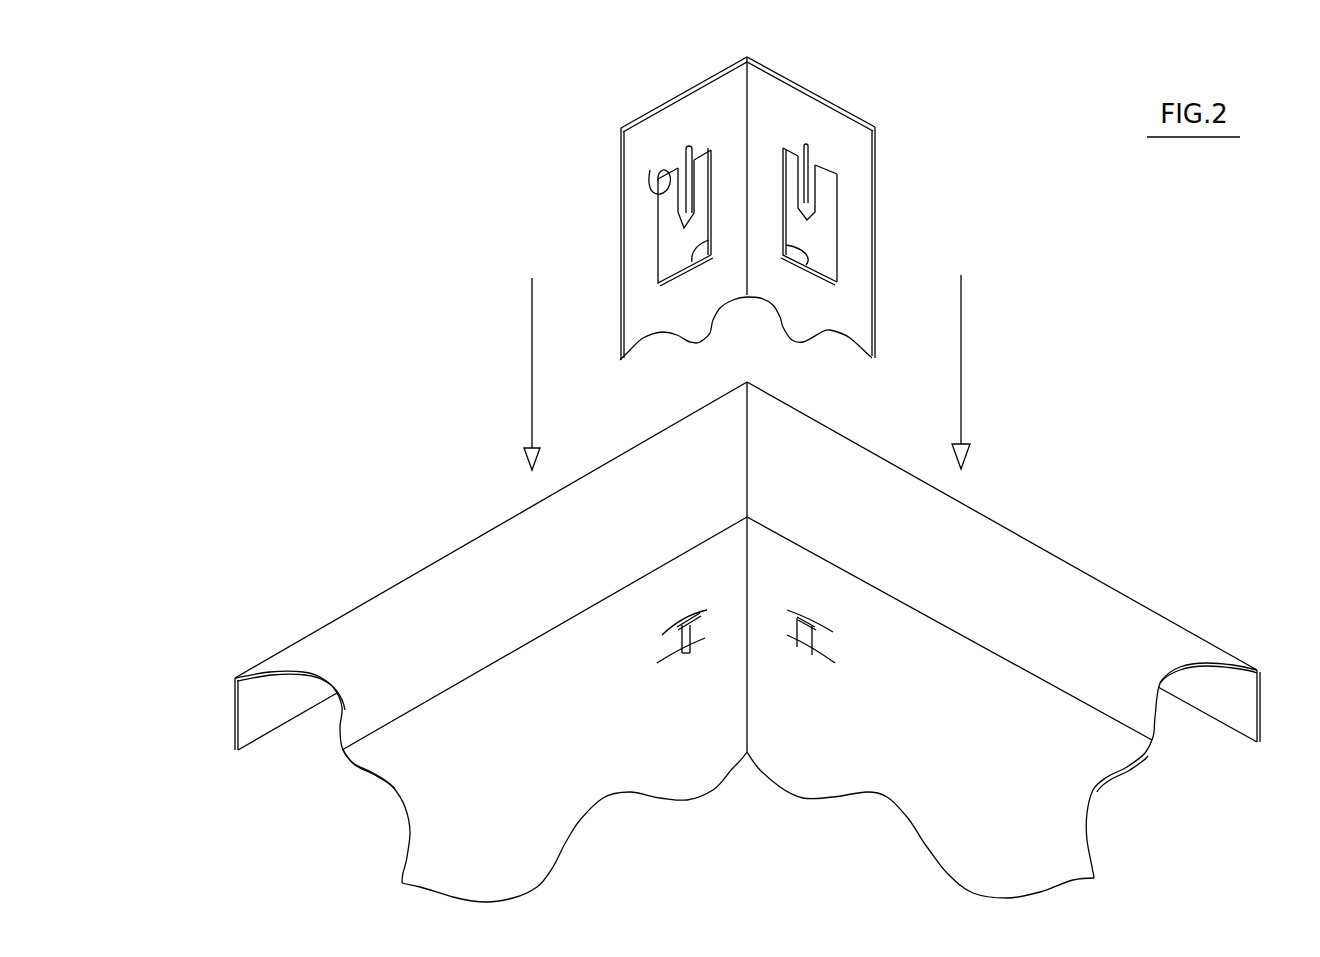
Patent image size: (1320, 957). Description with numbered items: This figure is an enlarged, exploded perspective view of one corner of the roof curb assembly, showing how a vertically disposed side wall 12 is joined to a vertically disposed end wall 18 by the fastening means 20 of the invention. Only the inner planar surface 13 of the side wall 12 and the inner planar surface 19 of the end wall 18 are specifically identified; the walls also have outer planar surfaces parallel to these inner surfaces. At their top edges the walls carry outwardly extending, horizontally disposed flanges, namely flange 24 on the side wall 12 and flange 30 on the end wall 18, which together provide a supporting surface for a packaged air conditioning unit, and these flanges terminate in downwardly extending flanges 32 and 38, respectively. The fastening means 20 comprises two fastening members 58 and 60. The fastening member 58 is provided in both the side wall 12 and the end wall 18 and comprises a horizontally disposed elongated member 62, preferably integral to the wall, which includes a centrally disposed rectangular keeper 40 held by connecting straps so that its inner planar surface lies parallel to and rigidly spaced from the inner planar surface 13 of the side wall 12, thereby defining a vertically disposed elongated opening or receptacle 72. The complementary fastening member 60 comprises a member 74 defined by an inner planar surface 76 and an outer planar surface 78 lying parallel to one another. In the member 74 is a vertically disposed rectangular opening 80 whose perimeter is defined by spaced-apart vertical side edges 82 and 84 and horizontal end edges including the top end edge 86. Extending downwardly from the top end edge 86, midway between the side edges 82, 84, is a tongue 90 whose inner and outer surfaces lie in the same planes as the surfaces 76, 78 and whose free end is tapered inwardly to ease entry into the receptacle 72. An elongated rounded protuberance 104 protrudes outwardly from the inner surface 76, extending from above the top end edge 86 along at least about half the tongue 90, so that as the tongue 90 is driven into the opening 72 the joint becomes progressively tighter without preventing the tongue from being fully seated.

The side wall 12 is at (473, 808).
The inner planar surface 13 is at (605, 800).
The end wall 18 is at (1023, 803).
The inner planar surface 19 is at (888, 798).
The fastening means 20 is at (887, 308).
The flange 24 is at (388, 633).
The flange 30 is at (1106, 632).
The downwardly extending flange 32 is at (272, 702).
The downwardly extending flange 38 is at (1223, 695).
The keeper 40 is at (693, 632).
The fastening member 58 is at (660, 605).
The fastening member 60 is at (867, 83).
The elongated member 62 is at (691, 655).
The opening 72 is at (808, 616).
The member 74 is at (619, 171).
The inner planar surface 76 is at (693, 325).
The outer planar surface 78 is at (695, 85).
The opening 80 is at (826, 245).
The side edge 82 is at (806, 265).
The side edge 84 is at (692, 262).
The top end edge 86 is at (650, 170).
The tongue 90 is at (683, 227).
The protuberance 104 is at (805, 145).